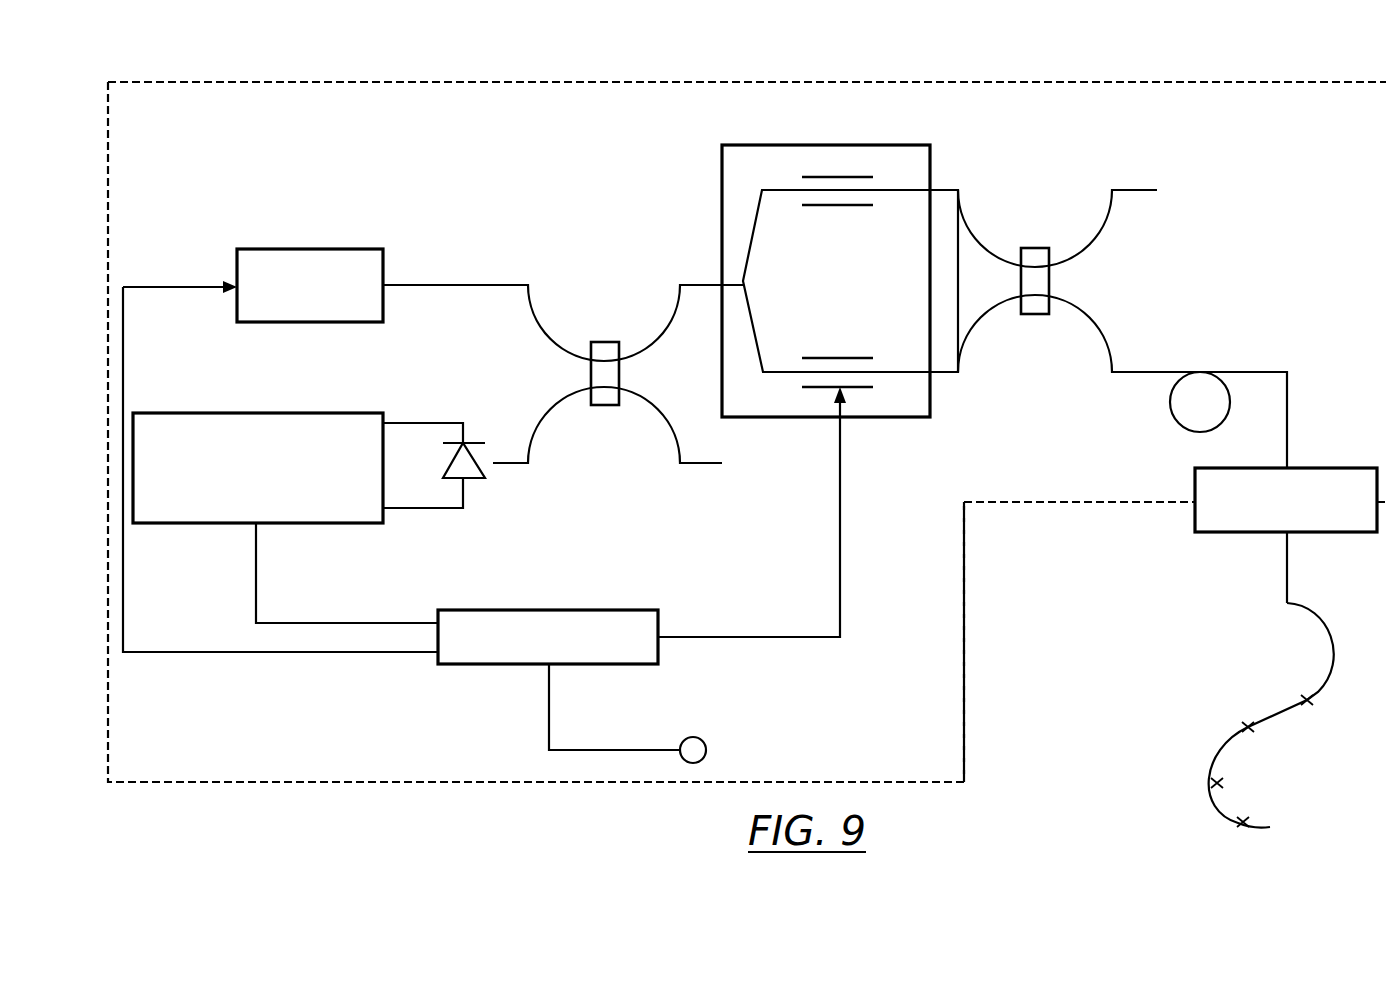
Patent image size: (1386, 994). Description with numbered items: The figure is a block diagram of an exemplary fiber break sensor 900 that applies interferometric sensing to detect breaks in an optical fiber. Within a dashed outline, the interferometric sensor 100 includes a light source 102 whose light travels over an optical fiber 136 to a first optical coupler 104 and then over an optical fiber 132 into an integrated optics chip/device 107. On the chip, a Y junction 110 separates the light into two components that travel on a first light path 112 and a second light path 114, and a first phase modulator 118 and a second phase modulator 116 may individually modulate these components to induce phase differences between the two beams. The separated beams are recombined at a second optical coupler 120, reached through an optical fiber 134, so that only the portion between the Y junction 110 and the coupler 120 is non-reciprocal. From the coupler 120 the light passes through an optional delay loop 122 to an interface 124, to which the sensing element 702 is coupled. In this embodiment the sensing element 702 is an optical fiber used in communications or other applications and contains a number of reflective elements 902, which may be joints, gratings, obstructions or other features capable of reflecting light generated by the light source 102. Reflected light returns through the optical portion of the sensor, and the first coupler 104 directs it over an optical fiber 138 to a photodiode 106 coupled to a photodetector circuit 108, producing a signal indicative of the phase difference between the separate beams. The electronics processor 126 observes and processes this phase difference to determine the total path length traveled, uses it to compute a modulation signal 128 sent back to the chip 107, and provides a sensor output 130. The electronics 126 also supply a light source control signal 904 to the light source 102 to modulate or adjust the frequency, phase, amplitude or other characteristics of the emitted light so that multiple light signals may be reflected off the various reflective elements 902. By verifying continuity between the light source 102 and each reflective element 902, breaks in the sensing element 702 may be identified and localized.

The fiber break sensor 900 is at (1242, 68).
The sensor 100 is at (968, 706).
The light source 102 is at (352, 258).
The first optical coupler 104 is at (605, 342).
The photodiode 106 is at (461, 442).
The integrated optics chip/device 107 is at (737, 348).
The photodetector circuit 108 is at (203, 430).
The Y junction 110 is at (742, 278).
The first light path 112 is at (777, 189).
The second light path 114 is at (773, 376).
The second phase modulator 116 is at (865, 357).
The first phase modulator 118 is at (848, 172).
The second optical coupler 120 is at (1037, 278).
The delay loop 122 is at (1183, 405).
The interface 124 is at (1205, 512).
The electronics processor 126 is at (523, 620).
The modulation signal 128 is at (840, 509).
The sensor output 130 is at (705, 737).
The optical fiber 132 is at (940, 190).
The optical fiber 134 is at (942, 373).
The optical fiber 136 is at (532, 310).
The optical fiber 138 is at (535, 437).
The sensing element 702 is at (1282, 712).
The reflective elements 902 is at (1307, 700).
The light source control signal 904 is at (268, 653).